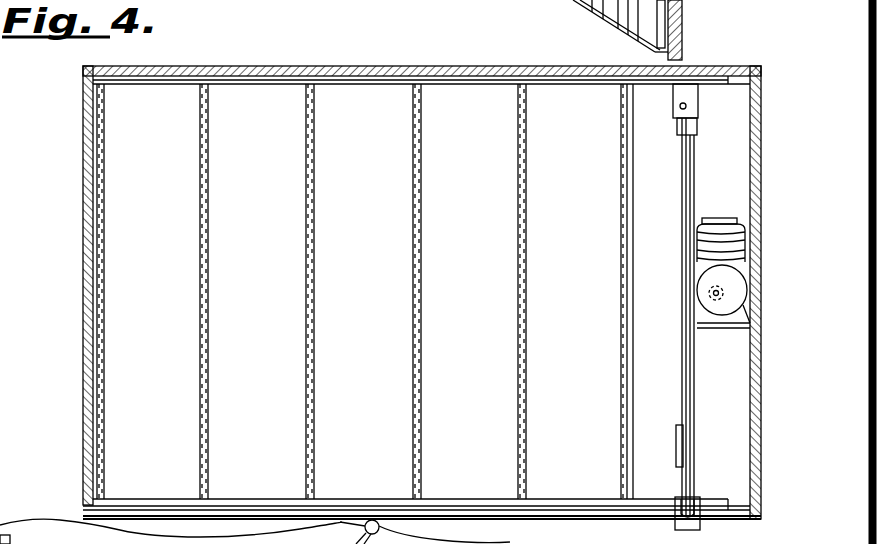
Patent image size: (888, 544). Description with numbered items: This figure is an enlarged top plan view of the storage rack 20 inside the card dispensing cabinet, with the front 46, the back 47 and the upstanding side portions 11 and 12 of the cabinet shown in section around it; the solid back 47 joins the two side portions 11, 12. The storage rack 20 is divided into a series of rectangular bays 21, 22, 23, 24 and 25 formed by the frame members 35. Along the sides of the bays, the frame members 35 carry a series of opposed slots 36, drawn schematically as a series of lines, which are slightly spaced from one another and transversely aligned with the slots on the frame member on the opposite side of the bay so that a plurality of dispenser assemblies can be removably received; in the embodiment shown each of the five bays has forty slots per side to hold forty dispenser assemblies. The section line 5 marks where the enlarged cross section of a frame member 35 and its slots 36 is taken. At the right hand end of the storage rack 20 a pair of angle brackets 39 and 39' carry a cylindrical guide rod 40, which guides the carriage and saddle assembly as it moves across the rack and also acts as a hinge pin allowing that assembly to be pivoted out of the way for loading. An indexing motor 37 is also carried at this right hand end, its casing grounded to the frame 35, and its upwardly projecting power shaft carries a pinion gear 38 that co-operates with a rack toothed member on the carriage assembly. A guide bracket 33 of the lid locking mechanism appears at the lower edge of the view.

The section line 5- 5 is at (535, 44).
The side portion 11 is at (87, 258).
The side portion 12 is at (755, 66).
The storage rack 20 is at (342, 63).
The rectangular bay 21 is at (166, 360).
The rectangular bay 22 is at (272, 360).
The rectangular bay 23 is at (375, 360).
The rectangular bay 24 is at (482, 360).
The rectangular bay 25 is at (587, 360).
The guide bracket 33 is at (24, 542).
The frame member 35 is at (104, 196).
The slot 36 is at (200, 118).
The indexing motor 37 is at (717, 220).
The pinion gear 38 is at (719, 301).
The angle bracket 39 is at (708, 520).
The angle bracket 39' is at (709, 109).
The cylindrical guide rod 40 is at (684, 187).
The front 46 is at (683, 14).
The back 47 is at (226, 66).